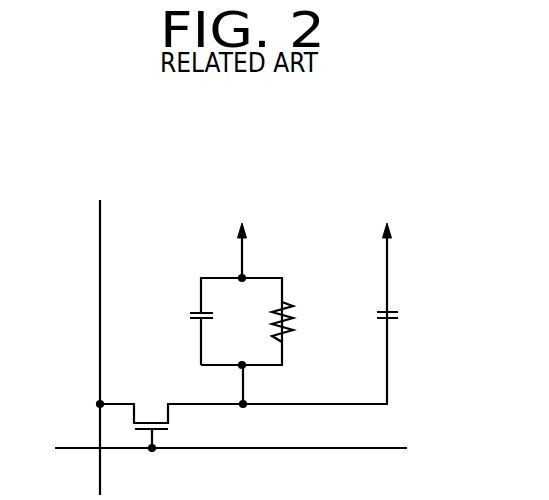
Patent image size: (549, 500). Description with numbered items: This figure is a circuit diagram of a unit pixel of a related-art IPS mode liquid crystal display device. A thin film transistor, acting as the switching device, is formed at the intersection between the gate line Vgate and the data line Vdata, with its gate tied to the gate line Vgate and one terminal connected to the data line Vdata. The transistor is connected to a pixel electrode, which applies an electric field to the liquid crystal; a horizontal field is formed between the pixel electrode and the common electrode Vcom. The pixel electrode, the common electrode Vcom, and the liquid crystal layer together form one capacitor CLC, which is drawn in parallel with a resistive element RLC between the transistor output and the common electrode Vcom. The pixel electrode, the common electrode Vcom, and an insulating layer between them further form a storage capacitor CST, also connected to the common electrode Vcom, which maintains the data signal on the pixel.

The data line Vdata is at (94, 331).
The gate line Vgate is at (239, 460).
The common electrode Vcom is at (312, 300).
The liquid crystal capacitor CLC is at (187, 315).
The liquid crystal resistor RLC is at (299, 322).
The storage capacitor CST is at (402, 313).